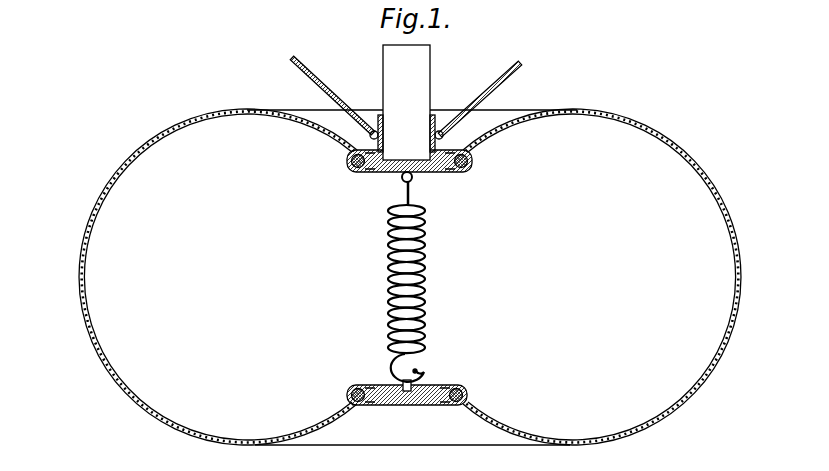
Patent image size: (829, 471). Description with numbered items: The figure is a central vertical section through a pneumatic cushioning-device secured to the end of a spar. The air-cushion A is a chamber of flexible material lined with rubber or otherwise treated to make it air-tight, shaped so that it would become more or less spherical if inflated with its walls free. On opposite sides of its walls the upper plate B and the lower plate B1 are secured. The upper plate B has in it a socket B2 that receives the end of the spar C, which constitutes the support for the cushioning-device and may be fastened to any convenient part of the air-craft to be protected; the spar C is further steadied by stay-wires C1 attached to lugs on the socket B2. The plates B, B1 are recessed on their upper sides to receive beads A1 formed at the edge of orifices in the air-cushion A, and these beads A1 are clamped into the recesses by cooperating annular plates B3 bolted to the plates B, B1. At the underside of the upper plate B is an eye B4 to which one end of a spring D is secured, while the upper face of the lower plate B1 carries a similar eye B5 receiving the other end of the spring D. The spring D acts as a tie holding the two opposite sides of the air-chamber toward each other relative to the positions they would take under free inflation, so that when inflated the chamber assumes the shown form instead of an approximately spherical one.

The air-cushion A is at (602, 130).
The beads A1 is at (495, 392).
The upper plate B is at (442, 172).
The lower plate B1 is at (407, 405).
The socket B2 is at (436, 118).
The annular plates B3 is at (469, 158).
The eye B4 is at (392, 177).
The eye B5 is at (416, 370).
The spar C is at (400, 92).
The stay-wires C1 is at (534, 86).
The spring D is at (390, 312).